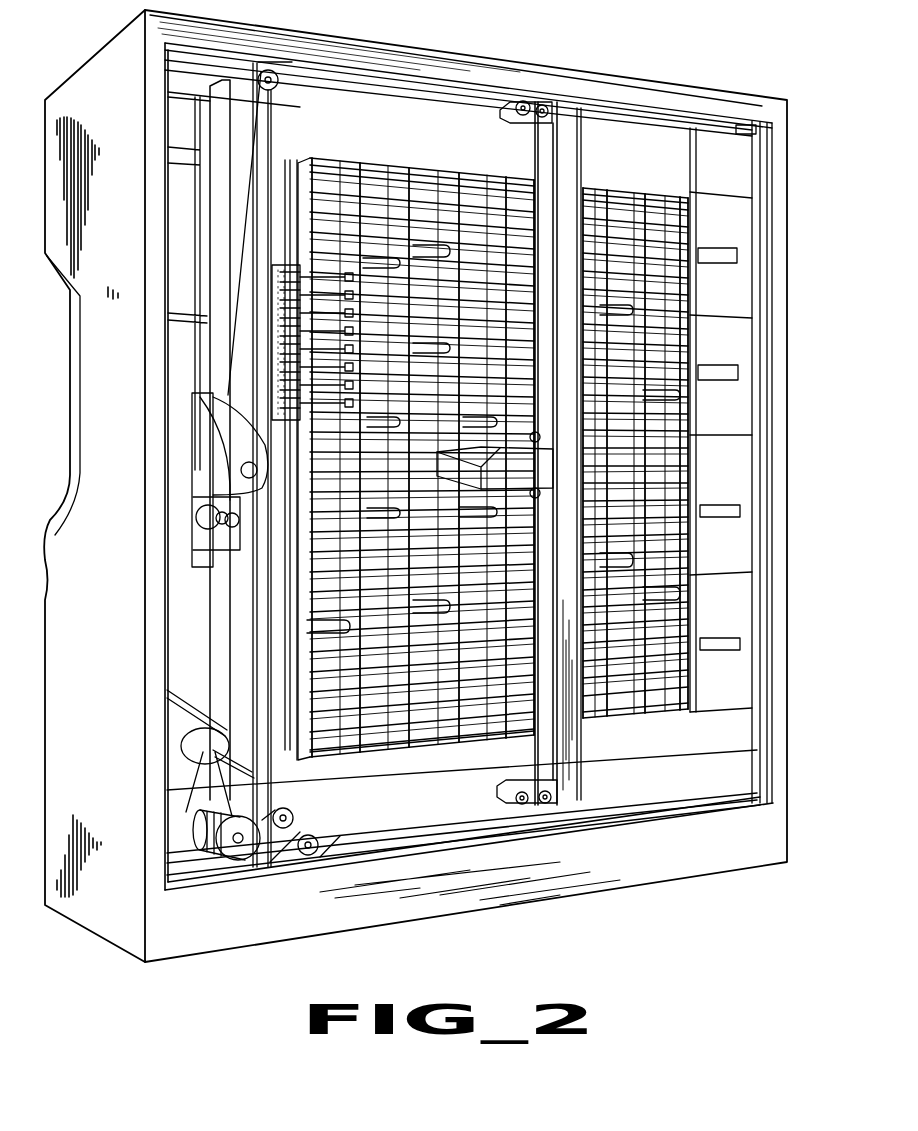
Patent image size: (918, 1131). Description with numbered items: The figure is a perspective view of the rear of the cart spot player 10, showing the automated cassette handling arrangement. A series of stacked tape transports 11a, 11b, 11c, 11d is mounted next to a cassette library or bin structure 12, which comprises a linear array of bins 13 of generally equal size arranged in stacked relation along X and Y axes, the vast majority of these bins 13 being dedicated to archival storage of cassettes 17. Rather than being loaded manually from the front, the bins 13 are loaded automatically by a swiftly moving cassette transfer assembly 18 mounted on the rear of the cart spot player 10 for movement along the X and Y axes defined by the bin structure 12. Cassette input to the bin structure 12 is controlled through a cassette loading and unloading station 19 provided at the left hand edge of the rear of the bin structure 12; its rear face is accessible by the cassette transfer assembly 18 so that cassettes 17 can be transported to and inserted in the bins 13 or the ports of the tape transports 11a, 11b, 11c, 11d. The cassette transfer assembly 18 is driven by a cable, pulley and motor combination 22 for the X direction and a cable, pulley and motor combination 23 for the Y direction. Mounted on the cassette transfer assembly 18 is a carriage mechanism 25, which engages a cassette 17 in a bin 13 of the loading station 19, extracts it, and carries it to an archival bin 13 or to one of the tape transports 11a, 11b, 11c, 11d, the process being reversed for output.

The cart spot player 10 is at (613, 50).
The tape transport 11a is at (738, 233).
The tape transport 11b is at (740, 347).
The tape transport 11c is at (742, 487).
The tape transport 11d is at (743, 625).
The bin structure 12 is at (657, 190).
The bins 13 is at (620, 196).
The cassettes 17 is at (378, 262).
The cassette transfer assembly 18 is at (600, 773).
The cassette loading/unloading station 19 is at (273, 347).
The cable, pulley and motor combination 22 is at (170, 738).
The cable, pulley and motor combination 23 is at (205, 463).
The carriage mechanism 25 is at (535, 486).